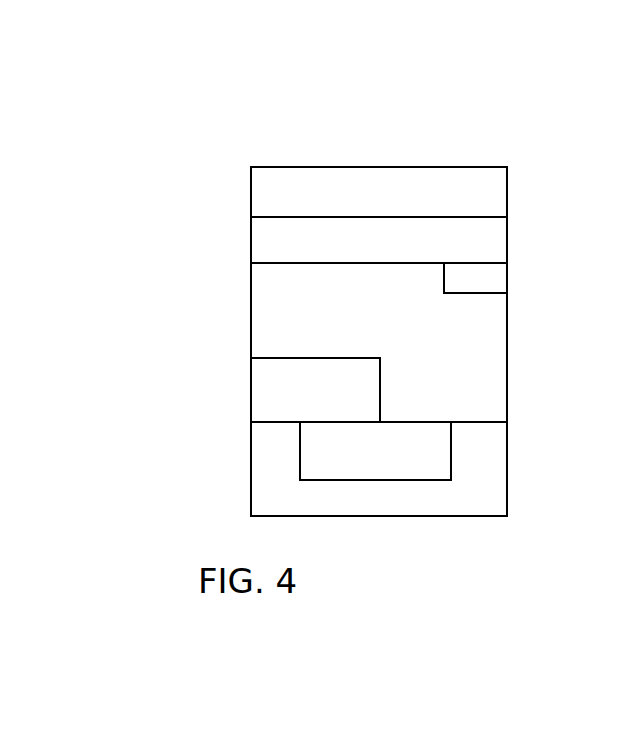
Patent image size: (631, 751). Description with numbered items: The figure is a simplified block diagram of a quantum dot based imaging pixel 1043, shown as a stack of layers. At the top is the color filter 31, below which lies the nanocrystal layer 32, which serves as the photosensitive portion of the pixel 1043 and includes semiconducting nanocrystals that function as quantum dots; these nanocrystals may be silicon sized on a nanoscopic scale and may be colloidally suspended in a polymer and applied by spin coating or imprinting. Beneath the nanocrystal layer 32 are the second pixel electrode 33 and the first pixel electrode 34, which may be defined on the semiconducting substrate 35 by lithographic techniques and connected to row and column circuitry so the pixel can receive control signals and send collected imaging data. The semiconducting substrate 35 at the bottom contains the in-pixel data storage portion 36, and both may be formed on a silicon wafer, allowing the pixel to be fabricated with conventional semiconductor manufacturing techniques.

The quantum dot based pixel 1043 is at (140, 108).
The color filter 31 is at (507, 188).
The nanocrystal layer 32 is at (507, 239).
The second pixel electrode 33 is at (507, 278).
The first pixel electrode 34 is at (251, 390).
The semiconducting substrate 35 is at (507, 448).
The in-pixel data storage portion 36 is at (300, 455).